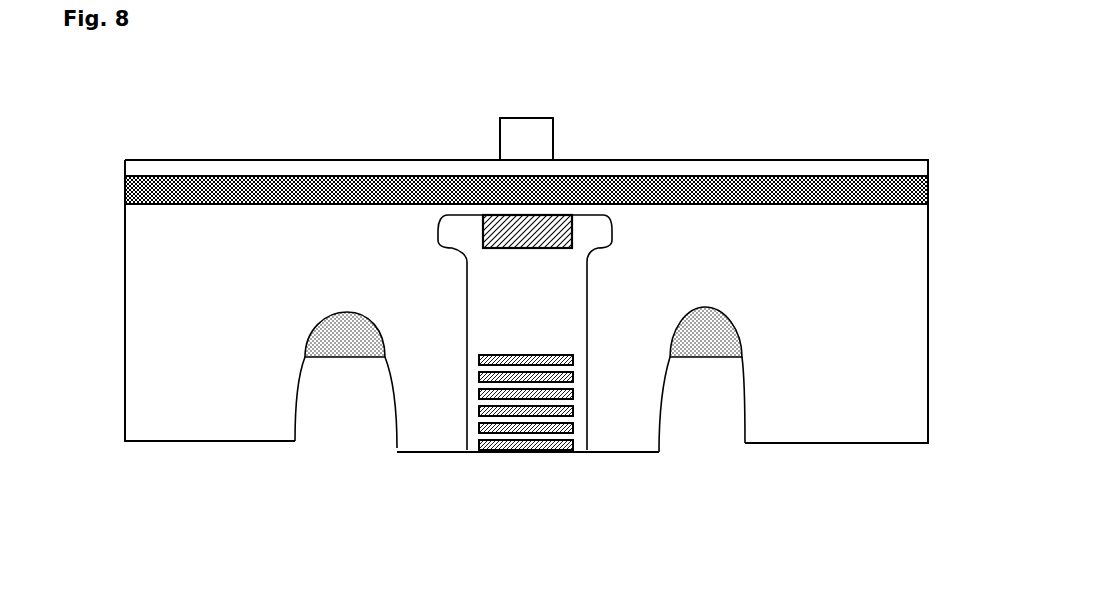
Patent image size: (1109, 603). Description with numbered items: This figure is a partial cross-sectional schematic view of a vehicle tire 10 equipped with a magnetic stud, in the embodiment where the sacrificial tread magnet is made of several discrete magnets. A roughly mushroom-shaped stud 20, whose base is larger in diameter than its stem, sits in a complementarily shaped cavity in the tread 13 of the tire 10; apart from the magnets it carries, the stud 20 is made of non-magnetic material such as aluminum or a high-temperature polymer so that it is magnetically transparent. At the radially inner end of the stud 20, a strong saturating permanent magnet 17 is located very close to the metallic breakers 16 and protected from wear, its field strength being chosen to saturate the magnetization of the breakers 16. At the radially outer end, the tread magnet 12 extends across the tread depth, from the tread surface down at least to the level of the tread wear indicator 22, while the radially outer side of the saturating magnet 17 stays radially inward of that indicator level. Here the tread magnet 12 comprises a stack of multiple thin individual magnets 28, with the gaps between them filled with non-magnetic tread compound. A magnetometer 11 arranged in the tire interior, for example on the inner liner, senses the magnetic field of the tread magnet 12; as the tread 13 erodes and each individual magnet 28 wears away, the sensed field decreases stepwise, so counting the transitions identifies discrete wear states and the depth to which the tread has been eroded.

The tire 10 is at (125, 418).
The magnetometer 11 is at (528, 118).
The tread magnet 12 is at (484, 477).
The tread 13 is at (640, 435).
The breakers 16 is at (793, 188).
The saturating magnet 17 is at (548, 248).
The stud 20 is at (467, 297).
The tread wear indicator 22 is at (357, 358).
The individual magnets 28 is at (479, 395).